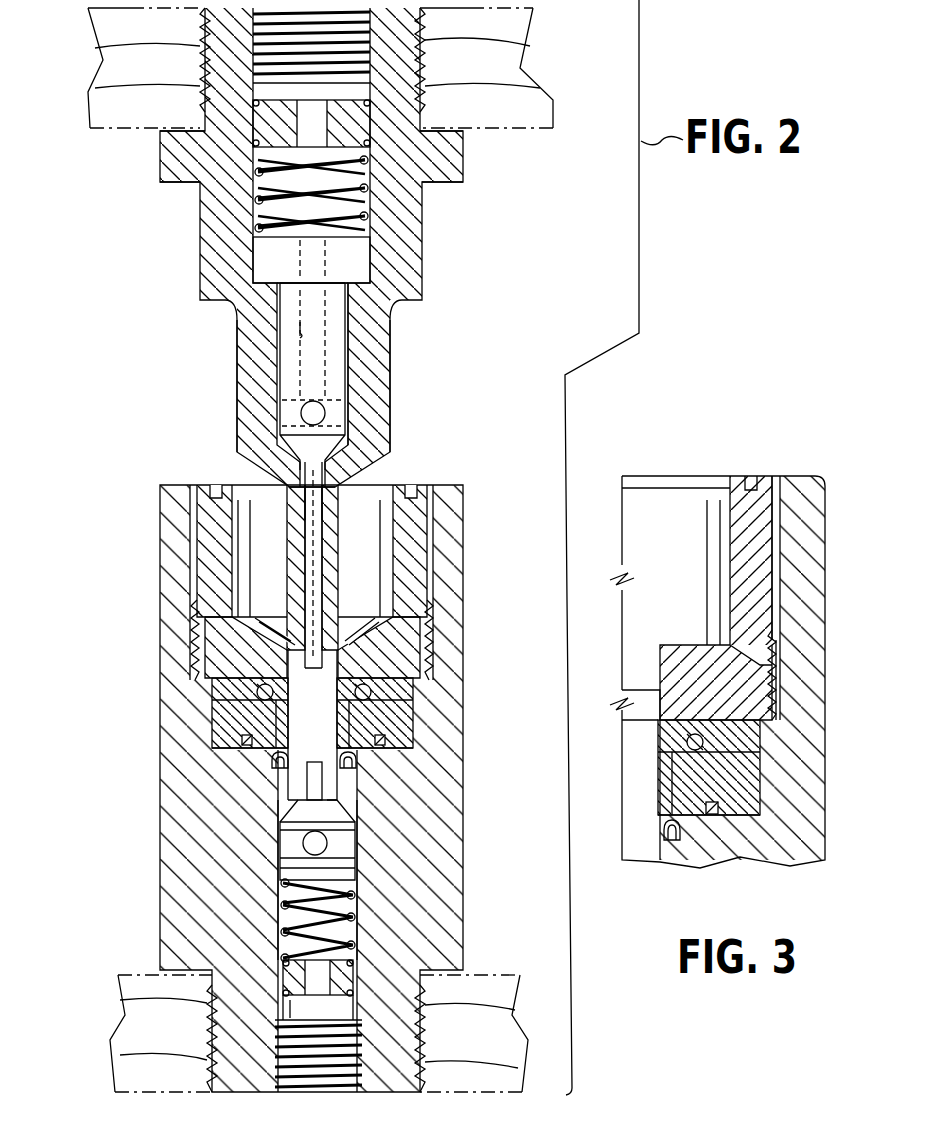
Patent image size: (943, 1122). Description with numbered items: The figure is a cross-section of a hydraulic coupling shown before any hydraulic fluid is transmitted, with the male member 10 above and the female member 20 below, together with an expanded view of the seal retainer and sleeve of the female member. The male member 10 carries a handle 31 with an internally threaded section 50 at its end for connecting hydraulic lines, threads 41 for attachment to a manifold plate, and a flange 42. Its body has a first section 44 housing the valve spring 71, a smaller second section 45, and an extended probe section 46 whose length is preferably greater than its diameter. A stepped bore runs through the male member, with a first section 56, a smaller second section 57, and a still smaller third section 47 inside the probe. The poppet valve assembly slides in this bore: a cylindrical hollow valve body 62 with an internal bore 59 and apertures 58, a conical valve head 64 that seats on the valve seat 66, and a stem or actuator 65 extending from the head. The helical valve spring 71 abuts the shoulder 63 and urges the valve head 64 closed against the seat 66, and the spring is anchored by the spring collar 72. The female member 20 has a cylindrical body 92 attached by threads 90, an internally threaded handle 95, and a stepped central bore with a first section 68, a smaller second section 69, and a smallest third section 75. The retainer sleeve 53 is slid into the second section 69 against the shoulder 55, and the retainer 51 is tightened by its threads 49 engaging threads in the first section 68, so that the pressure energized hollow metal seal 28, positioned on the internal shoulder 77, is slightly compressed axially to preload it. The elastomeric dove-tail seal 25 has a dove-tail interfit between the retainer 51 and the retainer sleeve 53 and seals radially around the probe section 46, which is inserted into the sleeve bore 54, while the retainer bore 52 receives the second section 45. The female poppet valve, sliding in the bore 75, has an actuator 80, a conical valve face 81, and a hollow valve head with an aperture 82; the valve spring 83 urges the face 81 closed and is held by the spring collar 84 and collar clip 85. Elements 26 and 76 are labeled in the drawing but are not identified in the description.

In FIG. 2, the male member 10 is at (180, 238).
In FIG. 2, the female member 20 is at (157, 610).
In FIG. 2, the dove-tail seal 25 is at (372, 692).
In FIG. 3, the dove-tail seal 25 is at (702, 742).
In FIG. 2, the backup ring 26 is at (386, 740).
In FIG. 3, the backup ring 26 is at (720, 811).
In FIG. 2, the hollow metal seal 28 is at (243, 748).
In FIG. 3, the hollow metal seal 28 is at (762, 830).
In FIG. 2, the handle 31 is at (208, 40).
In FIG. 2, the threads 41 is at (205, 82).
In FIG. 2, the flange 42 is at (160, 142).
In FIG. 2, the first section 44 is at (400, 266).
In FIG. 2, the second section 45 is at (282, 376).
In FIG. 2, the extended probe section 46 is at (240, 561).
In FIG. 2, the third section of the bore 47 is at (293, 602).
In FIG. 2, the threads 49 is at (430, 644).
In FIG. 3, the threads 49 is at (774, 656).
In FIG. 2, the internally threaded section 50 is at (372, 78).
In FIG. 2, the retainer 51 is at (200, 654).
In FIG. 3, the retainer 51 is at (760, 521).
In FIG. 2, the retainer bore 52 is at (200, 498).
In FIG. 3, the retainer bore 52 is at (742, 568).
In FIG. 2, the retainer sleeve 53 is at (222, 684).
In FIG. 3, the retainer sleeve 53 is at (752, 771).
In FIG. 2, the sleeve bore 54 is at (378, 706).
In FIG. 3, the sleeve bore 54 is at (700, 794).
In FIG. 2, the shoulder 55 is at (340, 748).
In FIG. 2, the first section of the bore 56 is at (372, 244).
In FIG. 2, the second section of the bore 57 is at (382, 375).
In FIG. 2, the apertures 58 is at (302, 411).
In FIG. 2, the internal bore 59 is at (298, 336).
In FIG. 2, the valve body 62 is at (349, 345).
In FIG. 2, the shoulder 63 is at (275, 256).
In FIG. 2, the valve head 64 is at (303, 449).
In FIG. 2, the stem 65 is at (300, 529).
In FIG. 2, the valve seat 66 is at (345, 458).
In FIG. 2, the first section 68 is at (392, 529).
In FIG. 2, the second section 69 is at (252, 699).
In FIG. 2, the valve spring 71 is at (364, 174).
In FIG. 2, the spring collar 72 is at (372, 112).
In FIG. 2, the third section 75 is at (352, 906).
In FIG. 2, the pin bore 76 is at (342, 792).
In FIG. 2, the internal shoulder 77 is at (354, 764).
In FIG. 3, the internal shoulder 77 is at (676, 843).
In FIG. 2, the actuator 80 is at (308, 773).
In FIG. 2, the conical valve face 81 is at (298, 812).
In FIG. 2, the aperture 82 is at (283, 838).
In FIG. 2, the valve spring 83 is at (295, 892).
In FIG. 2, the spring collar 84 is at (334, 978).
In FIG. 2, the collar clip 85 is at (282, 993).
In FIG. 2, the threads 90 is at (208, 1063).
In FIG. 2, the cylindrical body 92 is at (210, 924).
In FIG. 2, the internally threaded handle 95 is at (276, 1043).